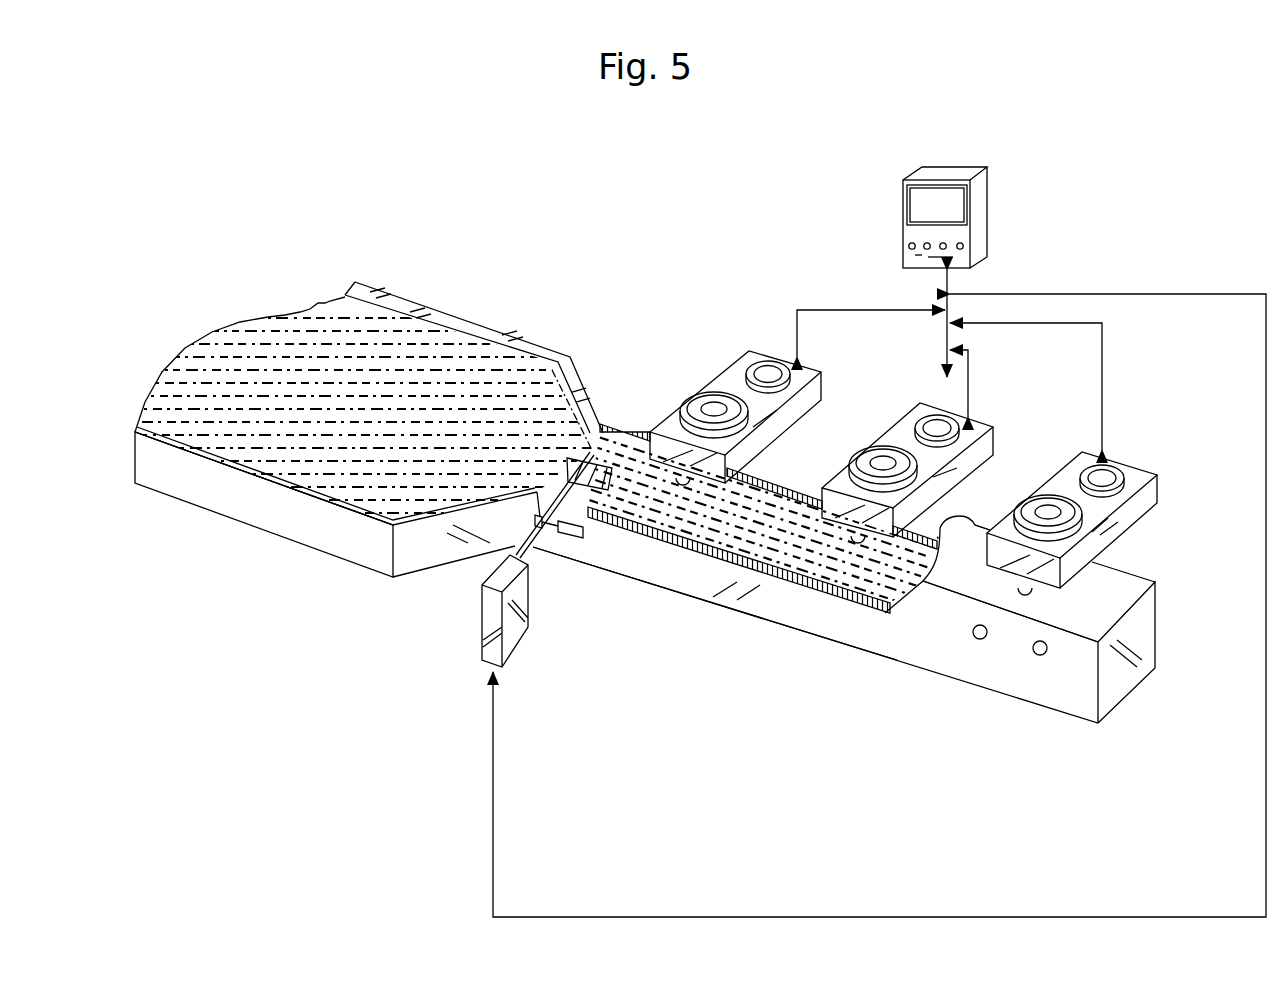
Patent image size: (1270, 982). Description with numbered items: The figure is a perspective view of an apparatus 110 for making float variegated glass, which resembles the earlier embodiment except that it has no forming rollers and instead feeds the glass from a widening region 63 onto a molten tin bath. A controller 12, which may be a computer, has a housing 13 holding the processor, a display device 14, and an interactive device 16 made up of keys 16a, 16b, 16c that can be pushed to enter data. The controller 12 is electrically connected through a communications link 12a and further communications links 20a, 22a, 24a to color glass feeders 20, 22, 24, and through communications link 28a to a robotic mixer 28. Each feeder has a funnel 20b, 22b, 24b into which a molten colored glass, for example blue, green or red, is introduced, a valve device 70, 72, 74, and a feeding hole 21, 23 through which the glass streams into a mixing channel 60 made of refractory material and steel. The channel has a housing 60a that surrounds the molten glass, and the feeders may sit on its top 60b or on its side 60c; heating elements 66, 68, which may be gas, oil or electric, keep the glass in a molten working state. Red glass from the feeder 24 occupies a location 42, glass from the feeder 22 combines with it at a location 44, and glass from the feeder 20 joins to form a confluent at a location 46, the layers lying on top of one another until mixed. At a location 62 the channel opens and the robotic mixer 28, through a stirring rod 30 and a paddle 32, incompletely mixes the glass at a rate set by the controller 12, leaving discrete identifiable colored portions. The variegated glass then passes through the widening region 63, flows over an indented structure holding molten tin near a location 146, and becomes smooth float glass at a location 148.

The apparatus 110 is at (752, 185).
The controller 12 is at (945, 195).
The communications link 12a is at (945, 295).
The housing 13 is at (950, 170).
The display device 14 is at (943, 197).
The interactive device 16 is at (945, 228).
The key 16a is at (908, 245).
The key 16b is at (925, 242).
The control button 16c is at (946, 242).
The color glass feeder 20 is at (735, 365).
The communications link 20a is at (810, 308).
The funnel 20b is at (765, 370).
The feeding hole 21 is at (747, 470).
The color glass feeder 22 is at (907, 442).
The communications link 22a is at (973, 388).
The funnel 22b is at (937, 423).
The feeding hole 23 is at (923, 523).
The color glass feeder 24 is at (1074, 492).
The communications link 24a is at (1042, 328).
The funnel 24b is at (1105, 474).
The robotic mixer 28 is at (517, 633).
The communications link 28a is at (1180, 294).
The stirring rod 30 is at (535, 560).
The paddle 32 is at (572, 470).
The location 42 is at (893, 608).
The location 44 is at (777, 553).
The location 46 is at (625, 500).
The mixing channel 60 is at (968, 663).
The housing 60a is at (938, 657).
The top 60b is at (953, 583).
The side 60c is at (858, 632).
The location 62 is at (570, 538).
The widening region 63 is at (522, 430).
The heating element 66 is at (983, 640).
The heating element 68 is at (1043, 655).
The valve device 70 is at (712, 409).
The valve device 72 is at (882, 462).
The valve device 74 is at (1047, 511).
The location 146 is at (300, 415).
The location 148 is at (448, 498).